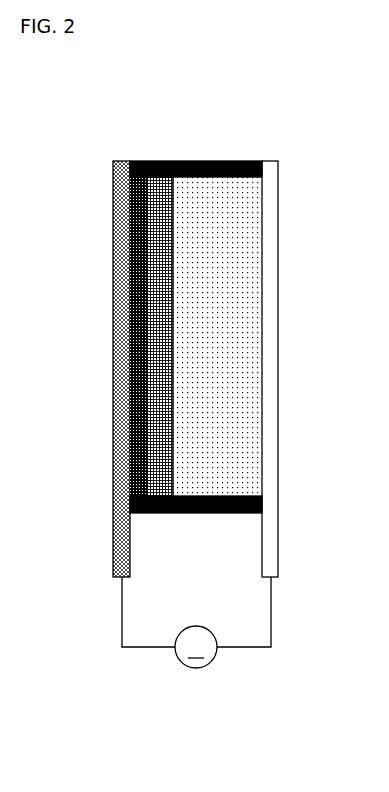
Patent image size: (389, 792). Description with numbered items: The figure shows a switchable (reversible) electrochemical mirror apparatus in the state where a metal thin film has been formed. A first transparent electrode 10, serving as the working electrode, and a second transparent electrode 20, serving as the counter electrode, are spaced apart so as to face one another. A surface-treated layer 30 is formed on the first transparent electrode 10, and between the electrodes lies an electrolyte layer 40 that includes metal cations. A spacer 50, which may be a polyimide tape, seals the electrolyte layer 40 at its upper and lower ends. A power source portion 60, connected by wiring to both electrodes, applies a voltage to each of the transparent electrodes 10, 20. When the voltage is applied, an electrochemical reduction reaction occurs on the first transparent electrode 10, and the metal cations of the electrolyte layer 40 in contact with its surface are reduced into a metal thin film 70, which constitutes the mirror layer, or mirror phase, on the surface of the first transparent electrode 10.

The first transparent electrode 10 is at (113, 272).
The second transparent electrode 20 is at (278, 292).
The surface-treated layer 30 is at (173, 205).
The electrolyte layer 40 is at (205, 427).
The spacer 50 is at (175, 160).
The power source portion 60 is at (213, 655).
The metal thin film 70 is at (113, 364).